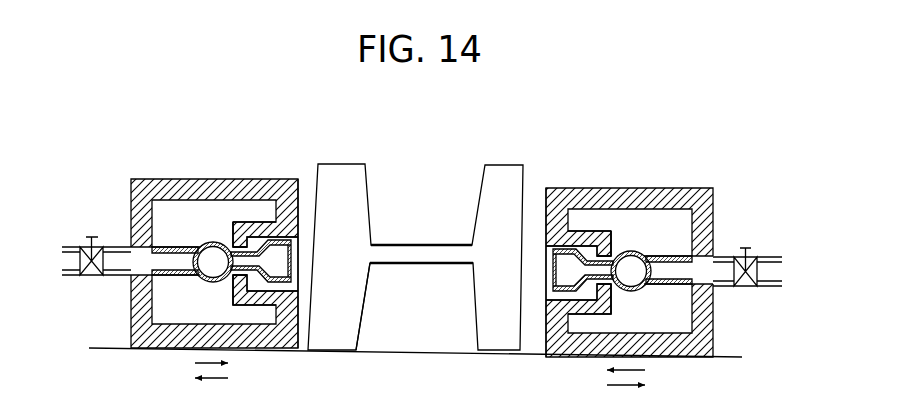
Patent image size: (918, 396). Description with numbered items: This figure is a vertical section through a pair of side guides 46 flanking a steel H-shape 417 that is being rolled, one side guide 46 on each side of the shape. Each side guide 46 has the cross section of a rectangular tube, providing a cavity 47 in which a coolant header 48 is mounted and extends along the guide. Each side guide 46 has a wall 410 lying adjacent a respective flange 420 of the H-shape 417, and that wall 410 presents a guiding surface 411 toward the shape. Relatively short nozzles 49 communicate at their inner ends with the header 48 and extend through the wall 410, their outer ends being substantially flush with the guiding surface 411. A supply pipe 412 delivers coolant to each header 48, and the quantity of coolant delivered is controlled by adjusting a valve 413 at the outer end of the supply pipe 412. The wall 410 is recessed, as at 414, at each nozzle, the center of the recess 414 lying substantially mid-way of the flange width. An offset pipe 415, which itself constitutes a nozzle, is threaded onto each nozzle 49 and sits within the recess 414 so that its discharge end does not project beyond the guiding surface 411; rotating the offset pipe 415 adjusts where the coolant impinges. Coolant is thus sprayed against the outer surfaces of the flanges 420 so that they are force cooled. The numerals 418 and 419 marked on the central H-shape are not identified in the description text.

The side guide 46 is at (194, 178).
The cavity 47 is at (168, 212).
The coolant header 48 is at (212, 242).
The nozzle 49 is at (233, 300).
The wall 410 is at (287, 226).
The guiding surface 411 is at (299, 208).
The supply pipe 412 is at (113, 276).
The valve 413 is at (92, 235).
The recess 414 is at (277, 294).
The offset pipe 415 is at (299, 258).
The H-shape 417 is at (364, 318).
The upper cross member 418 is at (417, 244).
The upper arms of connector 419 is at (480, 190).
The flange 420 is at (495, 255).